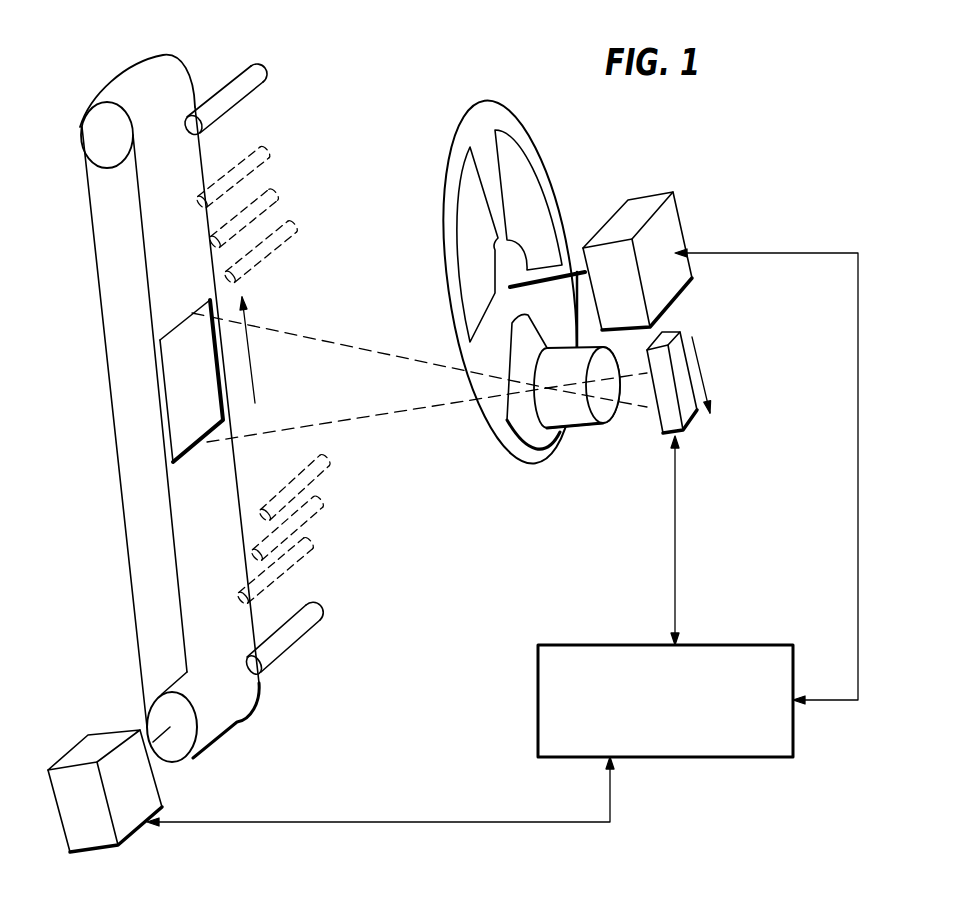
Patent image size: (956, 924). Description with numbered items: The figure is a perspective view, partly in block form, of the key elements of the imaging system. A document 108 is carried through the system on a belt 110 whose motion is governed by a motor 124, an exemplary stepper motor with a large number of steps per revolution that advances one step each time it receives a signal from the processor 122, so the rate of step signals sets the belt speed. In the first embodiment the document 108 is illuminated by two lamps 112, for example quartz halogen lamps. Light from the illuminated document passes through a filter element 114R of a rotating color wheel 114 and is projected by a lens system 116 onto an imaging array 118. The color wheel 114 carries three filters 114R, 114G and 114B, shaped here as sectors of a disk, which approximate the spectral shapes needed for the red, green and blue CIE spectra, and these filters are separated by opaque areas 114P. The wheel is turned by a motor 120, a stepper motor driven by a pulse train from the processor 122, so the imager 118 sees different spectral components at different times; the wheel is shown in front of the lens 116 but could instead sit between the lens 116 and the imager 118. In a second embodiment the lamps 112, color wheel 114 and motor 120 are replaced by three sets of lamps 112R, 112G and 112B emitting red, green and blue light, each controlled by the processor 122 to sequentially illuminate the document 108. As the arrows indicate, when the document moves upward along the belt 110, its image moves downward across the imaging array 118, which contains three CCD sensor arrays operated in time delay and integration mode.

The document 108 is at (173, 408).
The belt 110 is at (238, 722).
The lamps 112 is at (237, 95).
The red lamps 112R is at (270, 153).
The green lamps 112G is at (277, 196).
The blue lamps 112B is at (287, 248).
The color wheel 114 is at (499, 285).
The opaque areas 114P is at (482, 127).
The red filter element 114R is at (523, 420).
The green filter element 114G is at (533, 195).
The blue filter element 114B is at (472, 297).
The lens system 116 is at (597, 427).
The imaging array 118 is at (668, 332).
The motor 120 is at (673, 192).
The processor 122 is at (755, 758).
The motor 124 is at (83, 747).